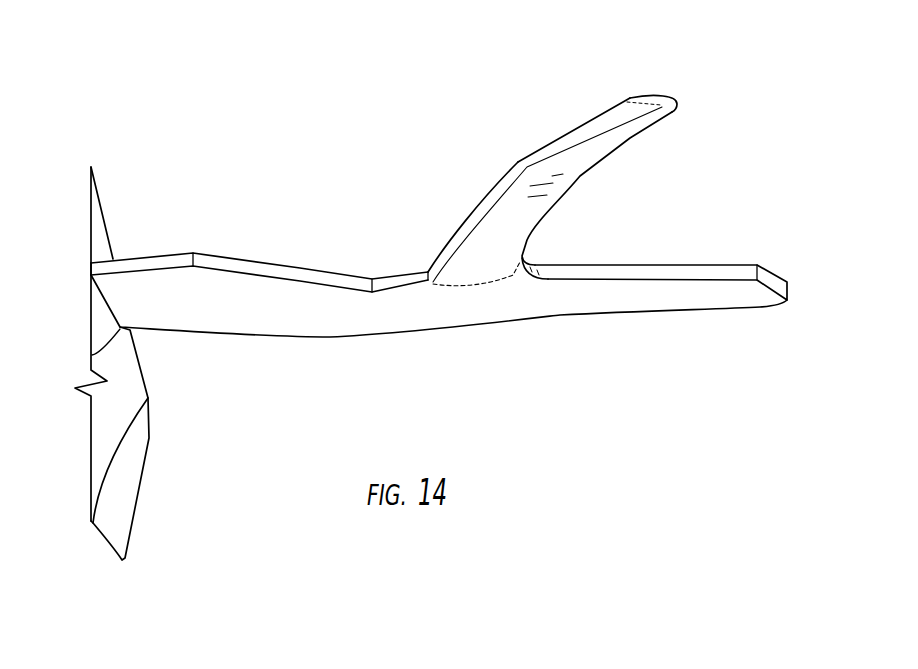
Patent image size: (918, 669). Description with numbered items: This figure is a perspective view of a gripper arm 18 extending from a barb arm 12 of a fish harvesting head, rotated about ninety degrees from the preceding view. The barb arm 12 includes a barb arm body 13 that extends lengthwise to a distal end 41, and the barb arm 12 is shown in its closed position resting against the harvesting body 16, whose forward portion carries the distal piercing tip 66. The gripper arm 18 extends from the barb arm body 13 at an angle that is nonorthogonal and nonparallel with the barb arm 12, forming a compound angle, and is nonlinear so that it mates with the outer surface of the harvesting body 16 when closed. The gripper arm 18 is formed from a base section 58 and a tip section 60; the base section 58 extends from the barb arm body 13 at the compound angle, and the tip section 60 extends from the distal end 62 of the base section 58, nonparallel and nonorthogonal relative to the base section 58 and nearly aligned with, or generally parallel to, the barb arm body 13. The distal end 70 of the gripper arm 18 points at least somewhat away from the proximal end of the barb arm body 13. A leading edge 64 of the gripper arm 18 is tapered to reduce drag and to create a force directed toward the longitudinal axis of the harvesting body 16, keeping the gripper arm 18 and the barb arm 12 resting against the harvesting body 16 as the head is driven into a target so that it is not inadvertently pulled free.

The barb arm 12 is at (337, 338).
The barb arm body 13 is at (398, 336).
The harvesting body 16 is at (100, 205).
The gripper arm 18 is at (527, 216).
The distal end 41 is at (777, 275).
The base section 58 is at (518, 162).
The tip section 60 is at (639, 88).
The distal end 62 is at (525, 164).
The leading edge 64 is at (592, 116).
The distal piercing tip 66 is at (137, 492).
The distal end 70 is at (667, 97).